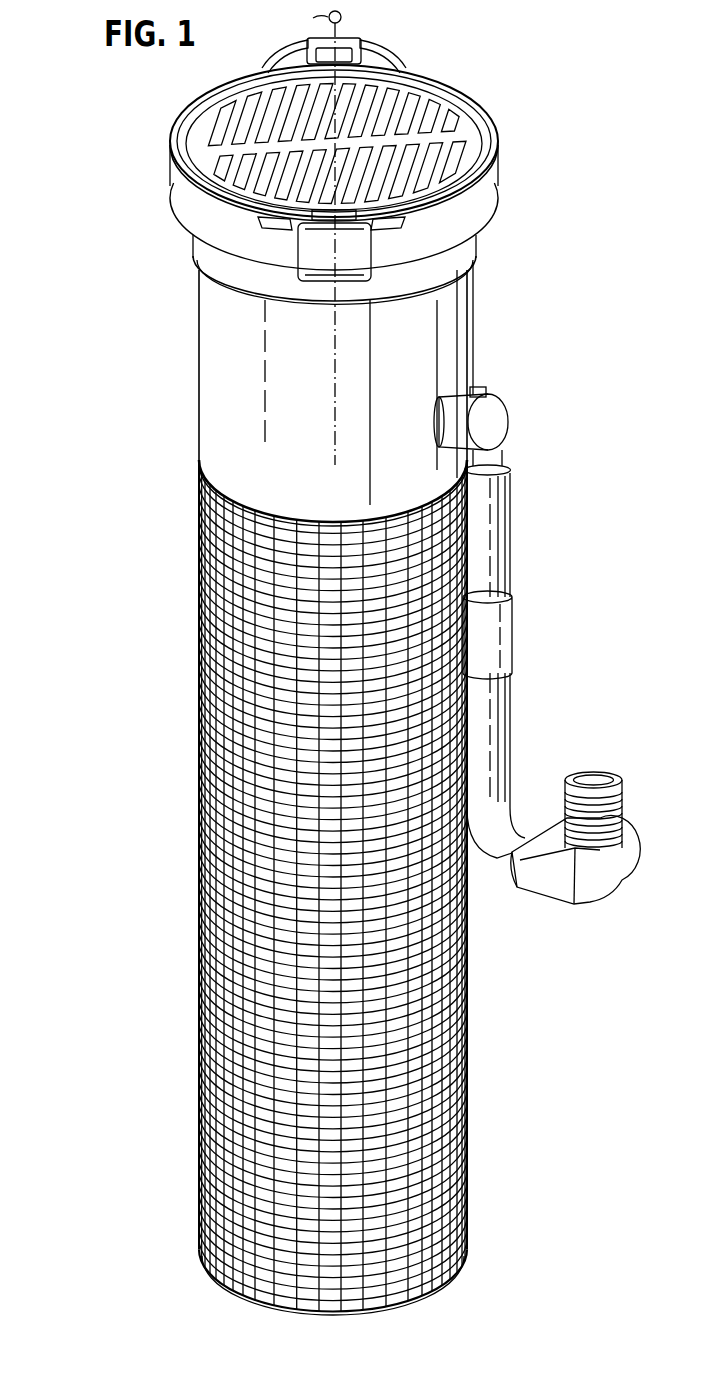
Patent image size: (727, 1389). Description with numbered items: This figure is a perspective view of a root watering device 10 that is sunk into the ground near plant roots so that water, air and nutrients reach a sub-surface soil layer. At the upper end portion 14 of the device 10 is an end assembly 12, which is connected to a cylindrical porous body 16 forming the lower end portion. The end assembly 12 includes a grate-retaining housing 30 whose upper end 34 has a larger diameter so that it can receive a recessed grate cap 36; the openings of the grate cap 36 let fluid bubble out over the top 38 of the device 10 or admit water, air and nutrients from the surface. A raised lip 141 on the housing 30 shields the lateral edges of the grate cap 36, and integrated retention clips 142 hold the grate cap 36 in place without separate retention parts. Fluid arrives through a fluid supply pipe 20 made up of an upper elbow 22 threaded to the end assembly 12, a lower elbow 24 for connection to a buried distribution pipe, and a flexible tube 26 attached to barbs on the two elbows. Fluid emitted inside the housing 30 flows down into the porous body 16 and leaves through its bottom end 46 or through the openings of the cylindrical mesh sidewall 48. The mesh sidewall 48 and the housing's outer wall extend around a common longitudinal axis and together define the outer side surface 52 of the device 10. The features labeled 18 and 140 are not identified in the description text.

The root watering device 10 is at (100, 592).
The end assembly 12 is at (457, 320).
The upper end portion 14 is at (232, 321).
The cylindrical porous body 16 is at (210, 1033).
The lower end of screen 18 is at (222, 1208).
The fluid supply pipe 20 is at (490, 533).
The upper elbow 22 is at (500, 422).
The lower elbow 24 is at (515, 818).
The flexible tube 26 is at (490, 706).
The grate-retaining housing 30 is at (222, 452).
The upper end 34 is at (493, 184).
The grate cap 36 is at (443, 98).
The top 38 is at (470, 121).
The bottom end 46 is at (432, 1302).
The cylindrical mesh sidewall 48 is at (222, 1132).
The outer side surface 52 is at (200, 690).
The upper edge of screen 140 is at (220, 525).
The raised lip 141 is at (286, 60).
The integrated retention clips 142 is at (362, 42).